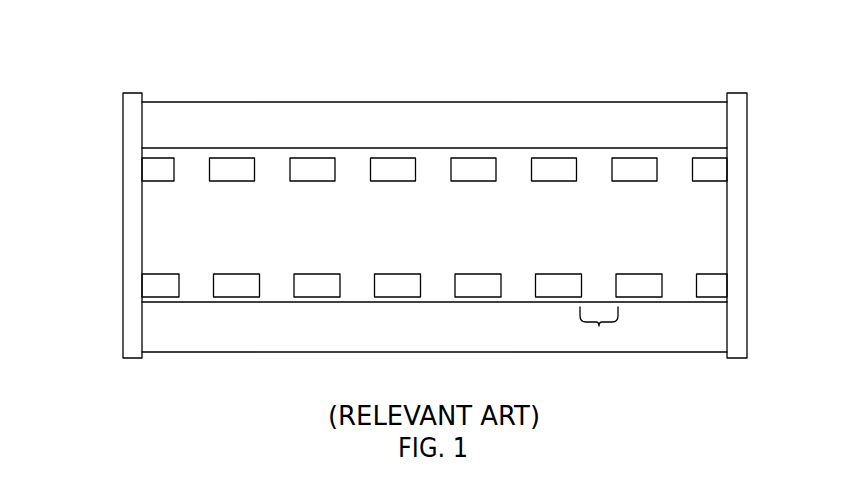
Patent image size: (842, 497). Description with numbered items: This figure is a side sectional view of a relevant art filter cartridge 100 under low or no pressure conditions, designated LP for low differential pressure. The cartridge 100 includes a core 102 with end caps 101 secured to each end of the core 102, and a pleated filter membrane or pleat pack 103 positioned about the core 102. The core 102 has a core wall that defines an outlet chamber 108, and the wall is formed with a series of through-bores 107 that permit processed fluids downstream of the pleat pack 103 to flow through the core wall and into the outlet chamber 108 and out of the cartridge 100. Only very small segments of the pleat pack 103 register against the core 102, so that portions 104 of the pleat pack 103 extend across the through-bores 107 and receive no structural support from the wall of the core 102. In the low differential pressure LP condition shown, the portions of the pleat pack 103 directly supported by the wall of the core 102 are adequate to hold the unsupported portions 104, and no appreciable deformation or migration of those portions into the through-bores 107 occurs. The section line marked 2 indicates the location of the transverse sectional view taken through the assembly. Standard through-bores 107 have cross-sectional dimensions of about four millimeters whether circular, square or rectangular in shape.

The filter cartridge 100 is at (435, 214).
The end caps 101 is at (123, 167).
The core 102 is at (434, 192).
The pleat pack 103 is at (702, 116).
The unsupported portions of pleat pack 104 is at (599, 326).
The through-bores 107 is at (348, 170).
The outlet chamber 108 is at (568, 232).
The low differential pressure LP is at (360, 84).
The section line 2- 2 is at (473, 125).